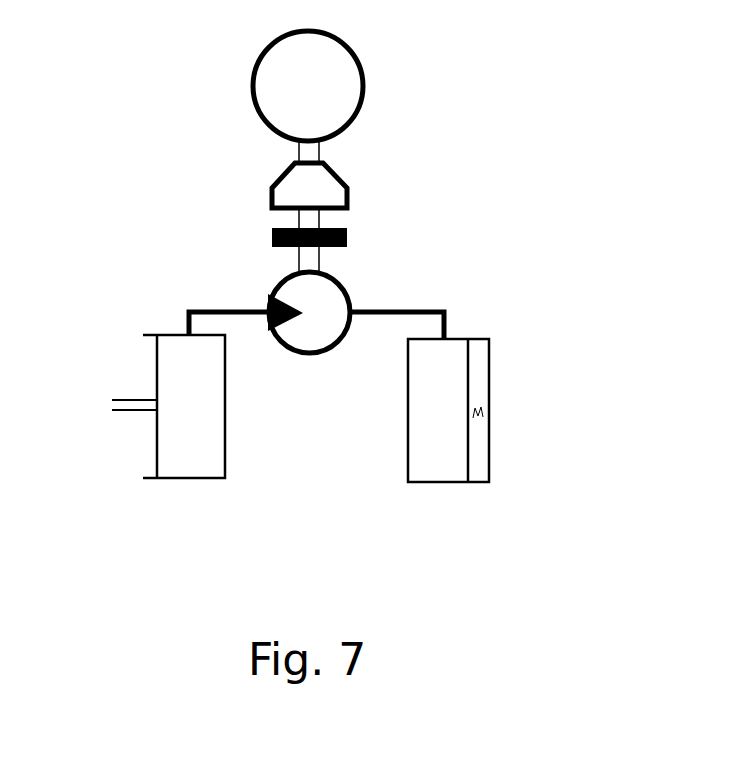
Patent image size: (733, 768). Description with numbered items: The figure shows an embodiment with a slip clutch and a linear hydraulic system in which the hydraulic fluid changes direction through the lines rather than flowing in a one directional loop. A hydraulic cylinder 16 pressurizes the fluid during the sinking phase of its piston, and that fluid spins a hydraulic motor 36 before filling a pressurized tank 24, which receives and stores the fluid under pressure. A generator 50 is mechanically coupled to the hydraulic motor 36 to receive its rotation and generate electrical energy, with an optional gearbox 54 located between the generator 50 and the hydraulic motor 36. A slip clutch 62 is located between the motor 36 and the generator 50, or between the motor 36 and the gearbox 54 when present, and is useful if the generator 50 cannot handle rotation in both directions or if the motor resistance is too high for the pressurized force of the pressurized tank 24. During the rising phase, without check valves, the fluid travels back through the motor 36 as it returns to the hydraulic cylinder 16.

The generator 50 is at (382, 77).
The gearbox 54 is at (355, 195).
The slip clutch 62 is at (355, 238).
The hydraulic motor 36 is at (309, 362).
The hydraulic cylinder 16 is at (140, 438).
The pressurized tank 24 is at (498, 452).